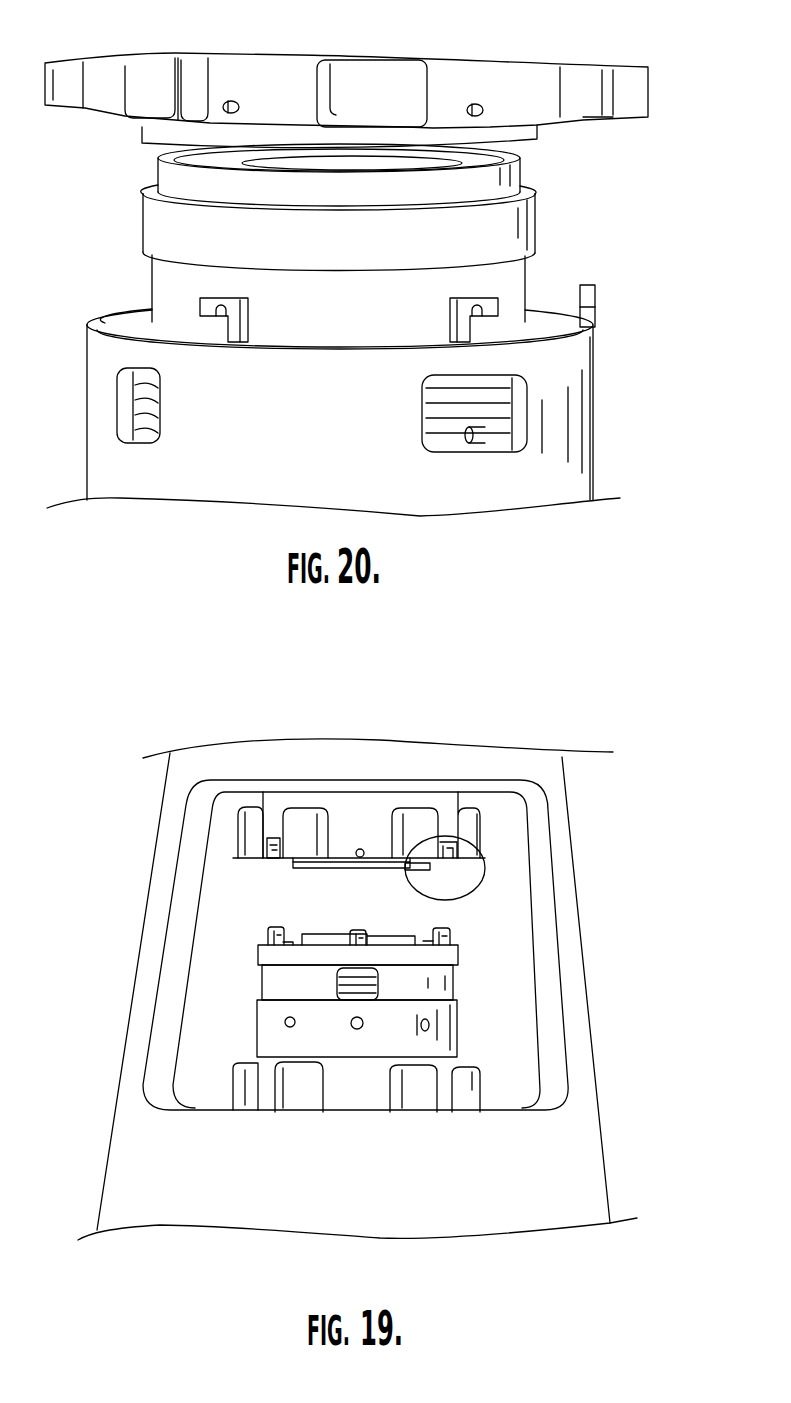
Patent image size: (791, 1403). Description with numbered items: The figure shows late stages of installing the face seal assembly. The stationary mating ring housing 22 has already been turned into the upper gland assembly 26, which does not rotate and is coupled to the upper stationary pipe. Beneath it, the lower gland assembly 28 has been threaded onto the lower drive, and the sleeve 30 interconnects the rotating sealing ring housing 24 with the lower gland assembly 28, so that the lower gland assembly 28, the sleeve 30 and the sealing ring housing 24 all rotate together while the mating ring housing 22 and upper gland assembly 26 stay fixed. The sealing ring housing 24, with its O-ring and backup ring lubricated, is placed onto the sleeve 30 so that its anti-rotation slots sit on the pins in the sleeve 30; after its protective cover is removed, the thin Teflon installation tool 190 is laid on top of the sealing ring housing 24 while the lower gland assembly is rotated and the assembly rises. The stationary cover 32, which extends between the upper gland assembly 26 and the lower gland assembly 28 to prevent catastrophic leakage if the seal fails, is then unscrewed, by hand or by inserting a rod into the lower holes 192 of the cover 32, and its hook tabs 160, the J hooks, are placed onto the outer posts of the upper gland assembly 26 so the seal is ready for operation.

In FIG. 20, the upper gland assembly 26 is at (638, 92).
In FIG. 19, the upper gland assembly 26 is at (250, 835).
In FIG. 20, the thin Teflon installation tool 190 is at (470, 187).
In FIG. 20, the rotating sealing ring housing 24 is at (528, 227).
In FIG. 20, the hook tabs 160 is at (455, 300).
In FIG. 19, the hook tabs 160 is at (279, 933).
In FIG. 20, the stationary cover 32 is at (575, 422).
In FIG. 19, the stationary cover 32 is at (273, 1012).
In FIG. 19, the stationary mating ring housing 22 is at (293, 863).
In FIG. 19, the sleeve 30 is at (398, 938).
In FIG. 19, the lower gland assembly 28 is at (248, 1093).
In FIG. 19, the lower holes 192 is at (357, 1029).